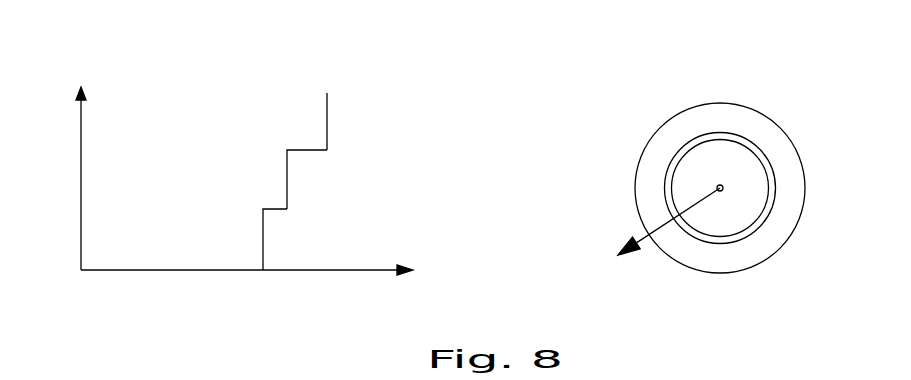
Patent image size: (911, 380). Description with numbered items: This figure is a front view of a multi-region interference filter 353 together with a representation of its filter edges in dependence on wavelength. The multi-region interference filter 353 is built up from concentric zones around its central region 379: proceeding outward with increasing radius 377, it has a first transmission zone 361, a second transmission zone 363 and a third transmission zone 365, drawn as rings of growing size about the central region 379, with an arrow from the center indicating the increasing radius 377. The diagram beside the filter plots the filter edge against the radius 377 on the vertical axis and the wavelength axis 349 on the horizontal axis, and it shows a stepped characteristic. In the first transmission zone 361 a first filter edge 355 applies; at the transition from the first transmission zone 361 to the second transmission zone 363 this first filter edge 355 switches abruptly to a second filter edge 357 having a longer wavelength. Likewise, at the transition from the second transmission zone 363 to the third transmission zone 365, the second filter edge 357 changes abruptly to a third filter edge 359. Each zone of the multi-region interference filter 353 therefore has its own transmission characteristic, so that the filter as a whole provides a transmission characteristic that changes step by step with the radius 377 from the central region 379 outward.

The time axis 349 is at (251, 287).
The multi-region interference filter 353 is at (760, 175).
The first filter edge 355 is at (263, 245).
The second filter edge 357 is at (287, 188).
The third filter edge 359 is at (327, 125).
The first transmission zone 361 is at (725, 167).
The second transmission zone 363 is at (770, 163).
The third transmission zone 365 is at (787, 220).
The radius 377 is at (665, 222).
The central region 379 is at (718, 197).